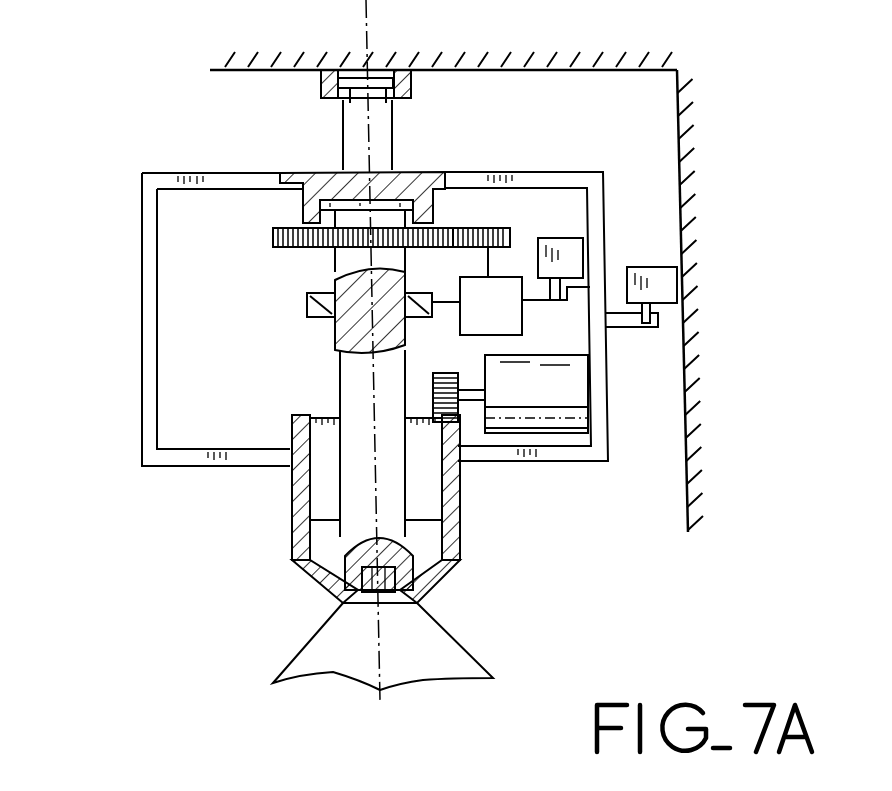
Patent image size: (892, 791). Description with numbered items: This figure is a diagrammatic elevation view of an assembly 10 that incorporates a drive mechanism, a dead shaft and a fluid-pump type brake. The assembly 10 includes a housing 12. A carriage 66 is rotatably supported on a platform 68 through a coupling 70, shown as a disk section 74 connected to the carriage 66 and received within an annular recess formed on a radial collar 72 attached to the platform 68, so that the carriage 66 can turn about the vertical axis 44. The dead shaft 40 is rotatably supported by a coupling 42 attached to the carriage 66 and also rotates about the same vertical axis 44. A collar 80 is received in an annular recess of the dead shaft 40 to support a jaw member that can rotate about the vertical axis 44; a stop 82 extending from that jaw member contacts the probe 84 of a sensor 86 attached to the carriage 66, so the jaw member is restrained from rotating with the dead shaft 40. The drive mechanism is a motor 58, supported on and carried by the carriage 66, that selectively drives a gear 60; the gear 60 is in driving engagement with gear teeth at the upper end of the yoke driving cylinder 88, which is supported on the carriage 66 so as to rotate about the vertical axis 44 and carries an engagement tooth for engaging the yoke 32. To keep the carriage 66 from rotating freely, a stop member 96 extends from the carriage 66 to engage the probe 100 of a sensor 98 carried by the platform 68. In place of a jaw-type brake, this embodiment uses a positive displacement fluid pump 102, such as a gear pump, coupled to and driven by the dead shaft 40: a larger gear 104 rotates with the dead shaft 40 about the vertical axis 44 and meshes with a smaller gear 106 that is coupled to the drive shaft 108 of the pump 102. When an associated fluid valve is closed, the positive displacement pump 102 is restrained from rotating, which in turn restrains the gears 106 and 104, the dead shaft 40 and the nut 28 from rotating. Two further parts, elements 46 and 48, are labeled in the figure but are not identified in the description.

The assembly 10 is at (306, 628).
The housing 12 is at (437, 637).
The nut 28 is at (398, 588).
The yoke 32 is at (460, 547).
The dead shaft 40 is at (353, 463).
The coupling 42 is at (291, 207).
The vertical axis 44 is at (363, 18).
The plate 46 is at (347, 200).
The flange block 48 is at (305, 195).
The motor 58 is at (580, 382).
The gear 60 is at (603, 407).
The carriage 66 is at (146, 438).
The platform 68 is at (624, 70).
The coupling 70 is at (318, 87).
The radial collar 72 is at (403, 68).
The disk section 74 is at (378, 80).
The collar 80 is at (307, 305).
The stop 82 is at (522, 322).
The probe 84 is at (602, 290).
The sensor 86 is at (585, 239).
The yoke driving cylinder 88 is at (458, 482).
The stop member 96 is at (663, 328).
The sensor 98 is at (667, 283).
The probe 100 is at (665, 311).
The positive displacement fluid pump 102 is at (522, 336).
The larger gear 104 is at (273, 237).
The smaller gear 106 is at (497, 226).
The drive shaft 108 is at (500, 258).